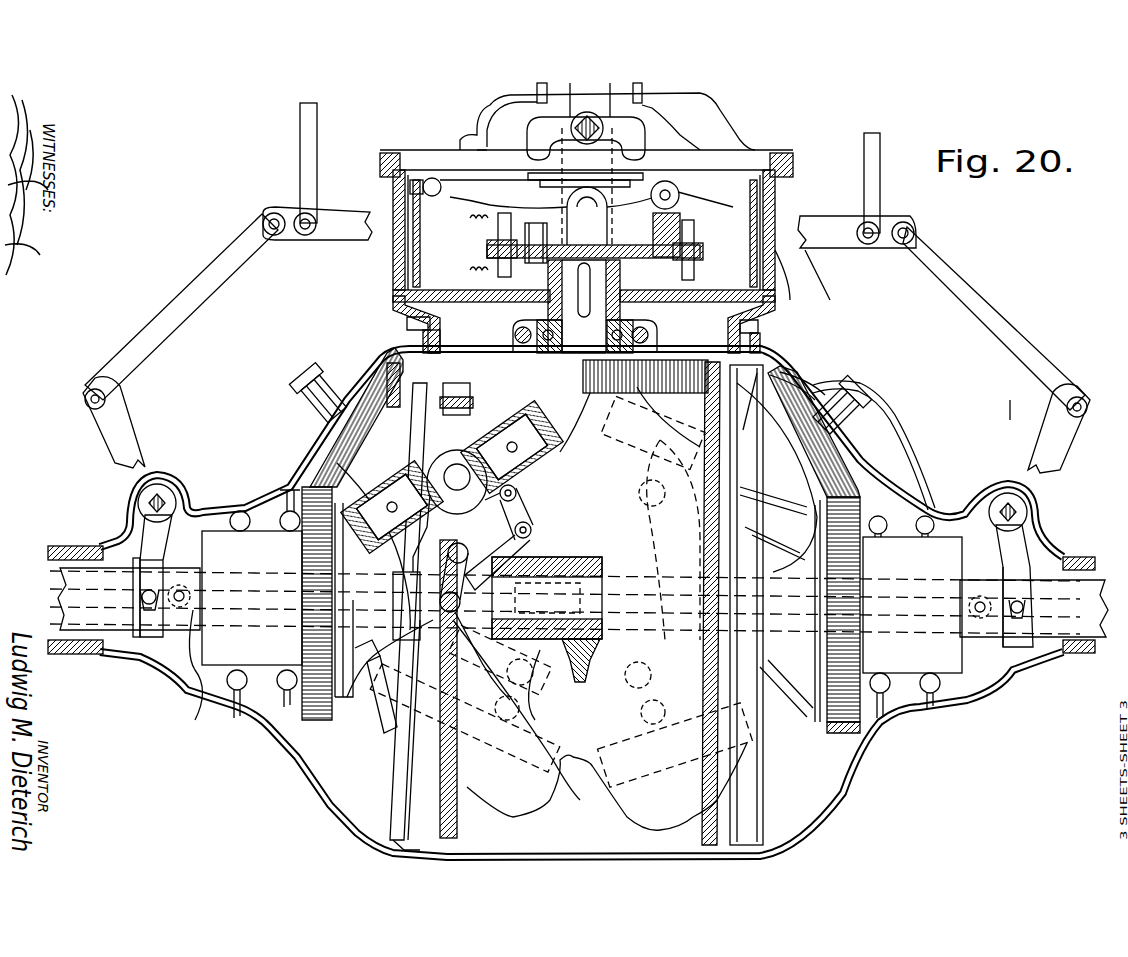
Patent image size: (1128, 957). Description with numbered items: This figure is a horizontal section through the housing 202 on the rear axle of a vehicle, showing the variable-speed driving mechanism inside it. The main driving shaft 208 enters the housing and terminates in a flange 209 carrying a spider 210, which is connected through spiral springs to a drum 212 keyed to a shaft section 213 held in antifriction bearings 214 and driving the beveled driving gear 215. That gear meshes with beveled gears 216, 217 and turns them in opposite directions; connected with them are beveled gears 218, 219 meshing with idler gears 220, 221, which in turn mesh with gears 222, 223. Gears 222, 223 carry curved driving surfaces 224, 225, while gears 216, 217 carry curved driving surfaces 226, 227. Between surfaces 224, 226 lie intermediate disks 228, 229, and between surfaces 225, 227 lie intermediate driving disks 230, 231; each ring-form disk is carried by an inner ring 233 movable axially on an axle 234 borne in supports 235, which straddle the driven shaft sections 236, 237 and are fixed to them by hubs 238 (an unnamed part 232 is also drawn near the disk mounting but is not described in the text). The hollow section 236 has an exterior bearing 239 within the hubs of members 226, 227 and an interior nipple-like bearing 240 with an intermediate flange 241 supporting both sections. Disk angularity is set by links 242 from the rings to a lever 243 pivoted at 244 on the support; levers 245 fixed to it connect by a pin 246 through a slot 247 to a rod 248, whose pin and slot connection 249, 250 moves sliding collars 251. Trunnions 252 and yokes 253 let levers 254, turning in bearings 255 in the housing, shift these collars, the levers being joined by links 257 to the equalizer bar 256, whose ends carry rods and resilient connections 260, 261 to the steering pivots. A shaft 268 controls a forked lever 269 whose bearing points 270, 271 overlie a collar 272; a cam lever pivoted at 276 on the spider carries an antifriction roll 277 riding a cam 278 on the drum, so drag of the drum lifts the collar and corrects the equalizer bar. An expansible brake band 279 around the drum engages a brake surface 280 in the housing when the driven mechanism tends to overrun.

The housing 202 is at (905, 800).
The main driving shaft 208 is at (510, 103).
The flange 209 is at (703, 240).
The spider 210 is at (640, 262).
The drum 212 is at (410, 288).
The shaft section 213 is at (595, 310).
The antifriction bearings 214 is at (512, 340).
The driving gear 215 is at (762, 345).
The beveled gear 216 is at (408, 340).
The beveled gear 217 is at (770, 410).
The beveled gear 218 is at (420, 362).
The beveled gear 219 is at (852, 400).
The idler gear 220 is at (340, 452).
The idler gear 221 is at (830, 442).
The gear 222 is at (300, 753).
The gear 223 is at (835, 740).
The curved driving surface 224 is at (305, 545).
The curved driving surface 225 is at (845, 560).
The curved driving surface 226 is at (660, 395).
The curved driving surface 227 is at (705, 400).
The intermediate disk 228 is at (290, 478).
The intermediate disk 229 is at (395, 700).
The intermediate driving disk 230 is at (850, 490).
The intermediate driving disk 231 is at (775, 700).
The bolt 232 is at (312, 392).
The inner ring 233 is at (470, 440).
The axle 234 is at (455, 490).
The supports 235 is at (517, 492).
The driven shaft section 236 is at (112, 642).
The driven shaft section 237 is at (1052, 655).
The hubs 238 is at (405, 578).
The exterior bearing 239 is at (620, 515).
The interior bearing 240 is at (615, 700).
The intermediate flange 241 is at (600, 605).
The links 242 is at (590, 490).
The lever 243 is at (540, 533).
The pivot 244 is at (440, 606).
The levers 245 is at (505, 725).
The pin 246 is at (375, 705).
The slot 247 is at (540, 715).
The rod 248 is at (230, 615).
The pin and slot connection 249 is at (185, 608).
The pin and slot connection 250 is at (212, 685).
The sliding collars 251 is at (140, 650).
The trunnions 252 is at (62, 600).
The yokes 253 is at (152, 545).
The levers 254 is at (120, 418).
The bearings 255 is at (148, 487).
The equalizer bar 256 is at (350, 232).
The links 257 is at (180, 318).
The rods and resilient connections 260 is at (300, 153).
The rods and resilient connections 261 is at (872, 178).
The shaft 268 is at (605, 127).
The forked lever 269 is at (648, 140).
The bearing point 270 is at (530, 145).
The bearing point 271 is at (780, 160).
The collar 272 is at (810, 250).
The pivot 276 is at (799, 281).
The antifriction roll 277 is at (410, 187).
The cam 278 is at (470, 233).
The expansible brake band 279 is at (278, 210).
The brake surface 280 is at (262, 225).